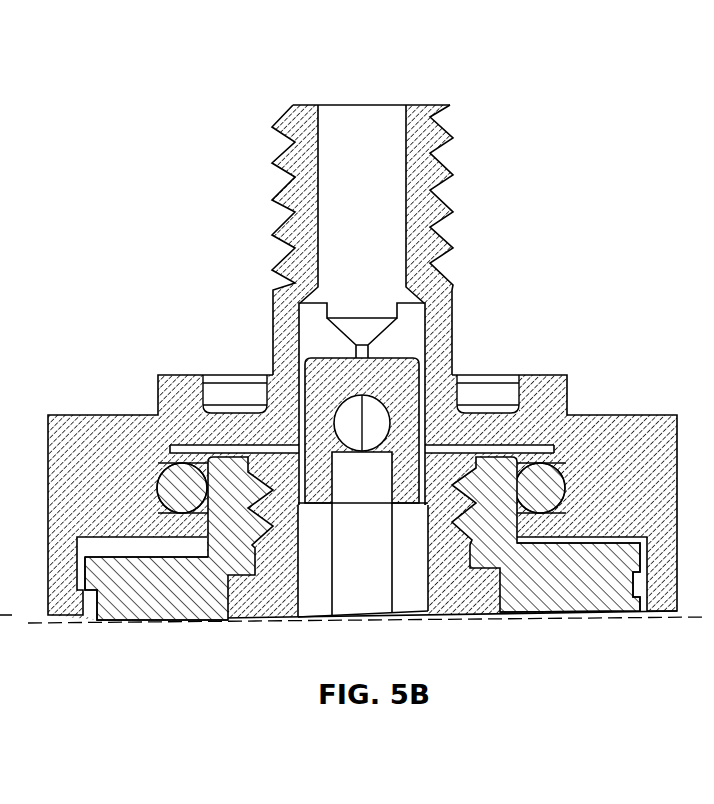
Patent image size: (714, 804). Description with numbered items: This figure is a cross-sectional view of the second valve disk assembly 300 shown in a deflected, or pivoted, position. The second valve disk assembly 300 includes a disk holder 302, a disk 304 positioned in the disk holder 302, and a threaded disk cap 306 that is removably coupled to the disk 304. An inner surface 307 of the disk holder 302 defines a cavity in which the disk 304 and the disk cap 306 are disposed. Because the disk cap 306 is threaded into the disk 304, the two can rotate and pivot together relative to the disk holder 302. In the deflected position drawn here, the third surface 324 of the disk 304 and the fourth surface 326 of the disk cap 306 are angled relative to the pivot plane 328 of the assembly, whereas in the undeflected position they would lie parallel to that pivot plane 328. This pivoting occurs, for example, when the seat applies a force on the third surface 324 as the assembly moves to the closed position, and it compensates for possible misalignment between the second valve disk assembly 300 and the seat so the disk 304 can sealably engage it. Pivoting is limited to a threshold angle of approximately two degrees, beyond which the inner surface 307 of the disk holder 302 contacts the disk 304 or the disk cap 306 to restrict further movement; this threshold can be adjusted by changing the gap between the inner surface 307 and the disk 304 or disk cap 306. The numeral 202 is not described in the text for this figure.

The second valve disk assembly 300 is at (203, 139).
The disk holder 302 is at (122, 413).
The disk 304 is at (213, 468).
The disk cap 306 is at (270, 455).
The inner surface 307 is at (502, 513).
The third surface 324 is at (163, 622).
The fourth surface 326 is at (262, 626).
The pivot plane 328 is at (692, 620).
The centerline / mounting surface 202 is at (24, 619).